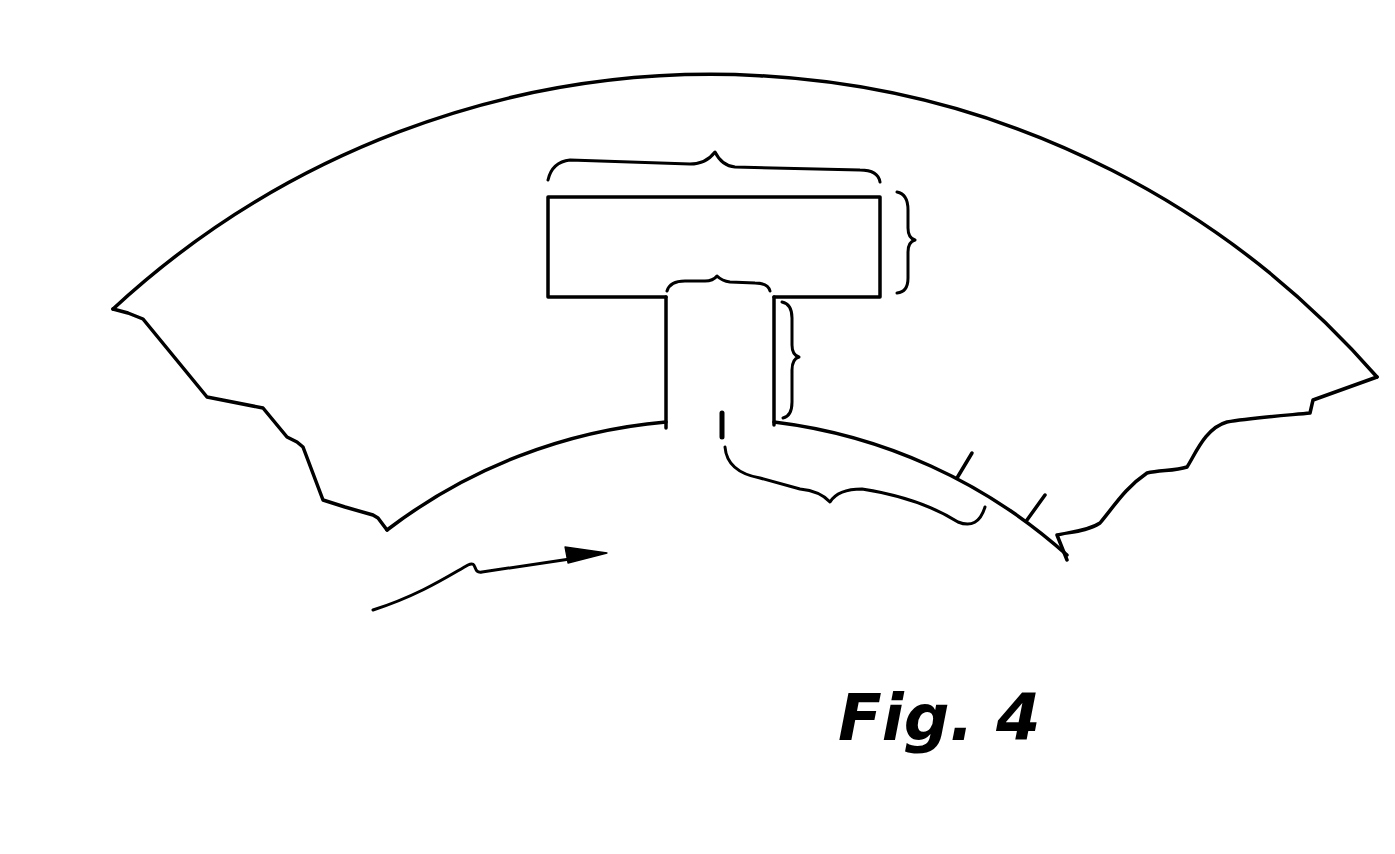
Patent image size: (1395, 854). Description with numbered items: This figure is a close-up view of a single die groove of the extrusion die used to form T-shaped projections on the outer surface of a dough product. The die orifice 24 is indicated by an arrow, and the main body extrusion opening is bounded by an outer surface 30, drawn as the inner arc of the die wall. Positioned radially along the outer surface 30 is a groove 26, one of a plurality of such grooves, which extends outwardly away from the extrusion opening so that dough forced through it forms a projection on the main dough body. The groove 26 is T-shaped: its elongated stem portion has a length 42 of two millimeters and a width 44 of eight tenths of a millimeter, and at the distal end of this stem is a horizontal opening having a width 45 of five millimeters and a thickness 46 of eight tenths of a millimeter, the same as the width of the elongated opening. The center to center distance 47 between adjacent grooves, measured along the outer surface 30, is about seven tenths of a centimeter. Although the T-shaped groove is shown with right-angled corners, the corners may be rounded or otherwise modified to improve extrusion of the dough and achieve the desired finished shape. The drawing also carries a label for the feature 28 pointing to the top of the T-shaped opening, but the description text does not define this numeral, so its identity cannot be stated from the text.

The direction of rotation arrow 24 is at (459, 594).
The slot opening 26 is at (666, 365).
The stator slot 28 is at (585, 197).
The stator bore surface 30 is at (527, 453).
The slot opening depth 42 is at (822, 360).
The slot opening width 44 is at (718, 256).
The slot width 45 is at (714, 140).
The slot head depth 46 is at (938, 242).
The tooth tip width 47 is at (885, 504).